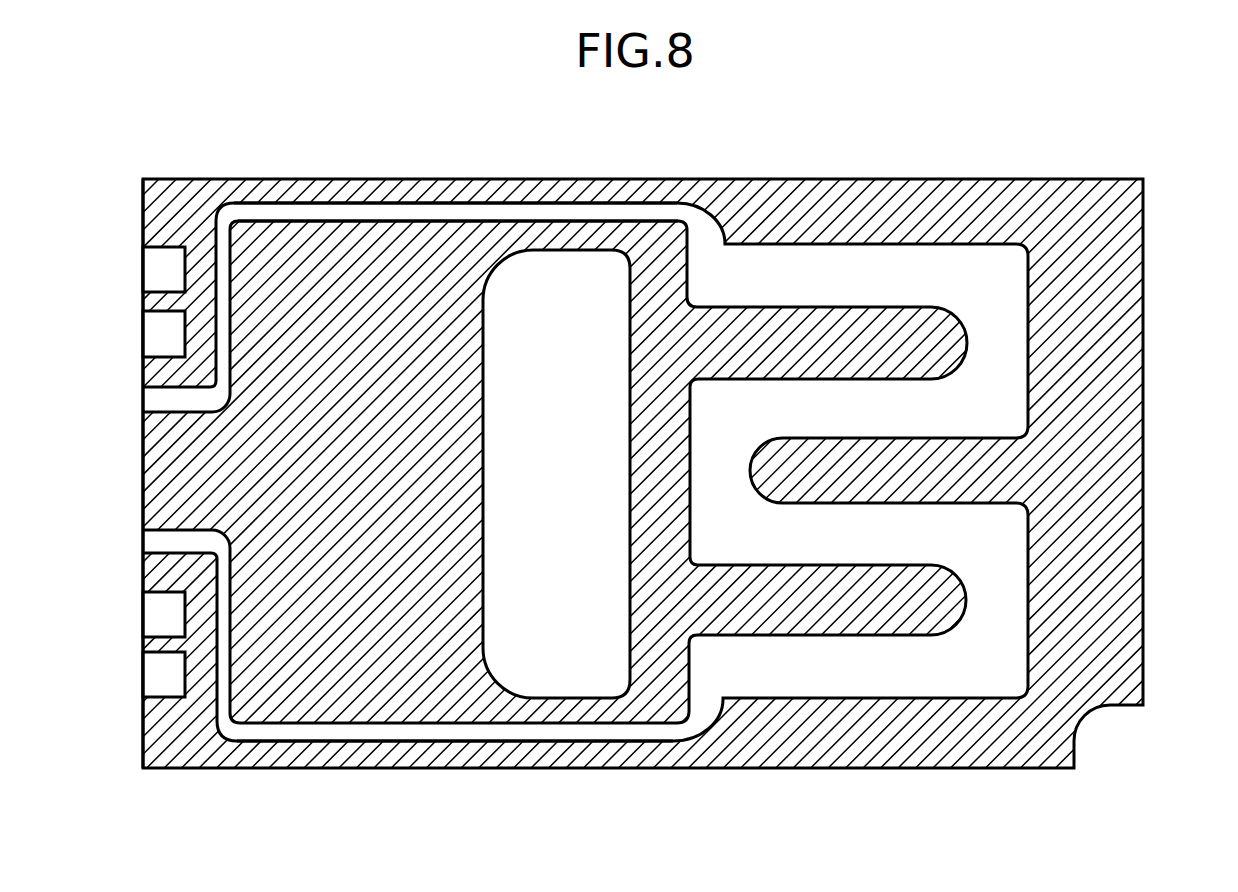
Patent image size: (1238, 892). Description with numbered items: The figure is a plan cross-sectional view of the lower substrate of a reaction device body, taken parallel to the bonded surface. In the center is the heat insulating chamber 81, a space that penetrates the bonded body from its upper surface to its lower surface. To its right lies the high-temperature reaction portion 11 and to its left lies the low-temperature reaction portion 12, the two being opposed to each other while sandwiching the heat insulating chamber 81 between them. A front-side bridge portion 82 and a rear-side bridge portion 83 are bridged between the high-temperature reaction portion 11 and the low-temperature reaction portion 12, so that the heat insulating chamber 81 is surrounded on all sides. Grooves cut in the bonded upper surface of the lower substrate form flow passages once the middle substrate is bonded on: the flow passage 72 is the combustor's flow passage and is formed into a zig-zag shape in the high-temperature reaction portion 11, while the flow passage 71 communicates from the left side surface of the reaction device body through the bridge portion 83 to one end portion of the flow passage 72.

The high-temperature reaction portion 11 is at (1033, 460).
The low-temperature reaction portion 12 is at (417, 668).
The flow passage 71 is at (340, 217).
The flow passage 72 is at (893, 265).
The heat insulating chamber 81 is at (603, 683).
The bridge portion 82 is at (530, 748).
The bridge portion 83 is at (568, 192).